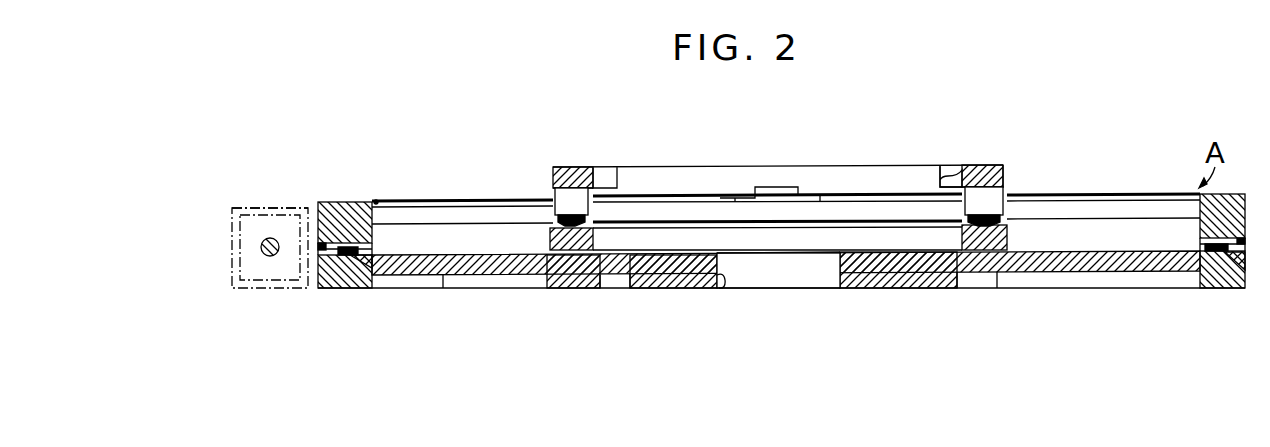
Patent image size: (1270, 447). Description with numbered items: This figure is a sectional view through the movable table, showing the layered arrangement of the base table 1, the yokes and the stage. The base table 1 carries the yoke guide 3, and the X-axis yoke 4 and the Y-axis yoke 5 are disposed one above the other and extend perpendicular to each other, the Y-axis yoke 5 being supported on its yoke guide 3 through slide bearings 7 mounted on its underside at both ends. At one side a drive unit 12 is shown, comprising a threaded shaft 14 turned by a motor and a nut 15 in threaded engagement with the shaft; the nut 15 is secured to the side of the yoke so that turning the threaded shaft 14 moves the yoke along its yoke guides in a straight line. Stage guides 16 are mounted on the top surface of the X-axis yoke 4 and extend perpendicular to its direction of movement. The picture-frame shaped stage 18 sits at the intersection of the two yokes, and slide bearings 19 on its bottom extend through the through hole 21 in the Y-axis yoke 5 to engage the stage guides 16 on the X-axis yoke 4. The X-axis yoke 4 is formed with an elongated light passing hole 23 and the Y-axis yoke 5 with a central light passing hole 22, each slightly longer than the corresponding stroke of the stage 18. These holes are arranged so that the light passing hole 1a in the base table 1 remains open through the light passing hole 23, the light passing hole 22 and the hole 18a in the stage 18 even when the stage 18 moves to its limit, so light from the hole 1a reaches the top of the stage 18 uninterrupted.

The base table 1 is at (446, 284).
The light passing hole 1a is at (723, 289).
The yoke guide 3 is at (326, 290).
The X-axis yoke 4 is at (579, 290).
The Y-axis yoke 5 is at (348, 202).
The slide bearing 7 is at (367, 262).
The drive unit 12 is at (270, 266).
The threaded shaft 14 is at (261, 247).
The nut 15 is at (275, 212).
The stage guide 16 is at (548, 290).
The stage 18 is at (987, 165).
The hole 18a is at (949, 174).
The slide bearing 19 is at (552, 199).
The through hole 21 is at (376, 200).
The light passing hole 22 is at (811, 198).
The light passing hole 23 is at (633, 225).